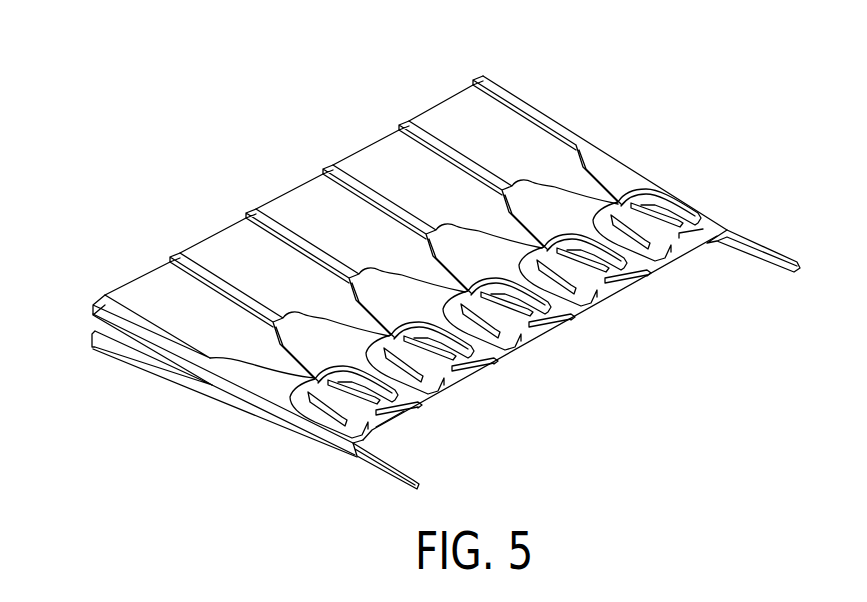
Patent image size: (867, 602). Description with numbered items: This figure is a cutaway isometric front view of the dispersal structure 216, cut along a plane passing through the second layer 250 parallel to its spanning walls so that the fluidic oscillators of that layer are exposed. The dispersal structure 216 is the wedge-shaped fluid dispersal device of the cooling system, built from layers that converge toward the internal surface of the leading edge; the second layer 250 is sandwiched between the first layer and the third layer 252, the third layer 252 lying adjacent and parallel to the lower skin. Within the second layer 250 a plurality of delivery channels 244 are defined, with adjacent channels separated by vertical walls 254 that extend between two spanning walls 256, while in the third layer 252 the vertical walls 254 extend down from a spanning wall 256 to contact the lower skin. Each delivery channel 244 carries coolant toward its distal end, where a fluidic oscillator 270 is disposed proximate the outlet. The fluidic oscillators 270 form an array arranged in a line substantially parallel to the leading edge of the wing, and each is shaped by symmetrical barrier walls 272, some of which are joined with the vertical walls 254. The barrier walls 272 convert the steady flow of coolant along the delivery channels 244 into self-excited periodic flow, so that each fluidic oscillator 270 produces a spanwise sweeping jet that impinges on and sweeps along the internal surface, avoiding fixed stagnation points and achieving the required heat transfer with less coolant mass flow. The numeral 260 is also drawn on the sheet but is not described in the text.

The dispersal structure 216 is at (423, 270).
The delivery channels 244 is at (191, 340).
The second layer 250 is at (96, 309).
The third layer 252 is at (94, 340).
The vertical walls 254 is at (178, 252).
The spanning wall 256 is at (227, 245).
The carrier bar 260 is at (352, 462).
The fluidic oscillators 270 is at (396, 437).
The barrier walls 272 is at (310, 393).